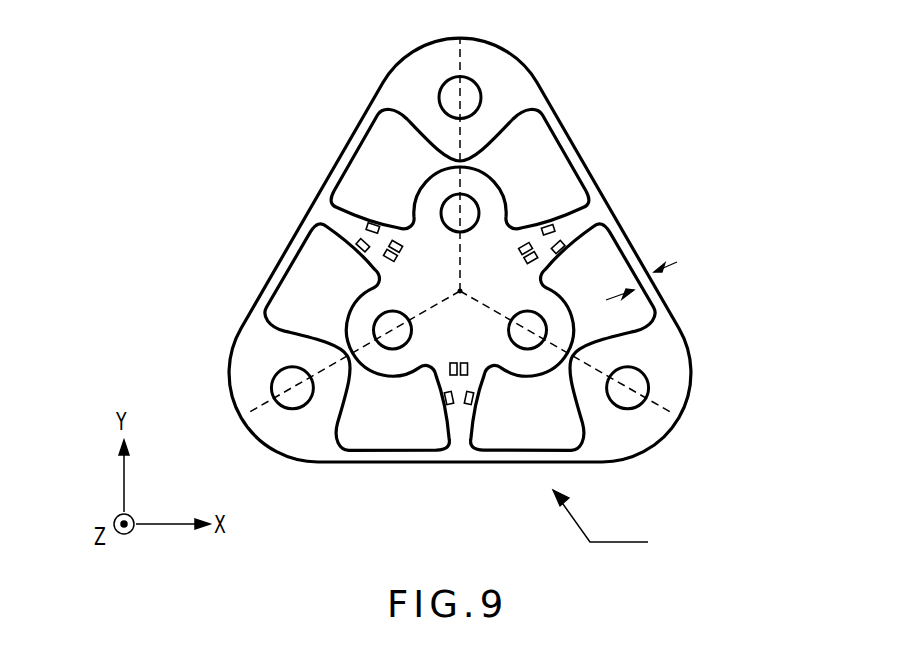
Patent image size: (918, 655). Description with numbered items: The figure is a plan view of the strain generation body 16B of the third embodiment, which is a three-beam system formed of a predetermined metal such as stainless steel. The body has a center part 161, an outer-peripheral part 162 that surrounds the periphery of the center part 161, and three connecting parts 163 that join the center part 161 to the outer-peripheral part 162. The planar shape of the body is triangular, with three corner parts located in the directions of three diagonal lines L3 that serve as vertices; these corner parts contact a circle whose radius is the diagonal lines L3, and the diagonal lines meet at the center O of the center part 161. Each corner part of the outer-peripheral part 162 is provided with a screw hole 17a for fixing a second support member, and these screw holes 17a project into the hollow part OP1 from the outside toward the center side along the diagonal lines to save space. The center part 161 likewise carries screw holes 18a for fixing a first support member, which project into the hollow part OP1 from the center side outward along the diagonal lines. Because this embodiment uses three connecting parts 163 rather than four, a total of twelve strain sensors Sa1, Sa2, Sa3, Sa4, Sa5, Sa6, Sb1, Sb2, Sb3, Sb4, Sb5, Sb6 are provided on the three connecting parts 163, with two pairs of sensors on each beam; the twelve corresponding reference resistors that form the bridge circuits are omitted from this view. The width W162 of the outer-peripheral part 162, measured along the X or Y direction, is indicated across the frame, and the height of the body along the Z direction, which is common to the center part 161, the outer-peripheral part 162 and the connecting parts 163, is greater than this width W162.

The outer-peripheral part 162 is at (571, 143).
The center part 161 is at (427, 287).
The connecting part 163 is at (337, 210).
The hollow part OP1 is at (394, 166).
The screw hole 17a is at (474, 90).
The screw hole 18a is at (467, 204).
The diagonal line L3 is at (462, 287).
The center O is at (460, 296).
The strain sensor Sa1 is at (527, 240).
The strain sensor Sa2 is at (535, 258).
The strain sensor Sa3 is at (468, 376).
The strain sensor Sa4 is at (450, 376).
The strain sensor Sa5 is at (388, 260).
The strain sensor Sa6 is at (394, 242).
The strain sensor Sb1 is at (549, 225).
The strain sensor Sb2 is at (561, 242).
The strain sensor Sb3 is at (474, 403).
The strain sensor Sb4 is at (447, 403).
The strain sensor Sb5 is at (358, 246).
The strain sensor Sb6 is at (370, 224).
The width of the outer-peripheral part W162 is at (655, 292).
The strain generation body 16B is at (600, 516).